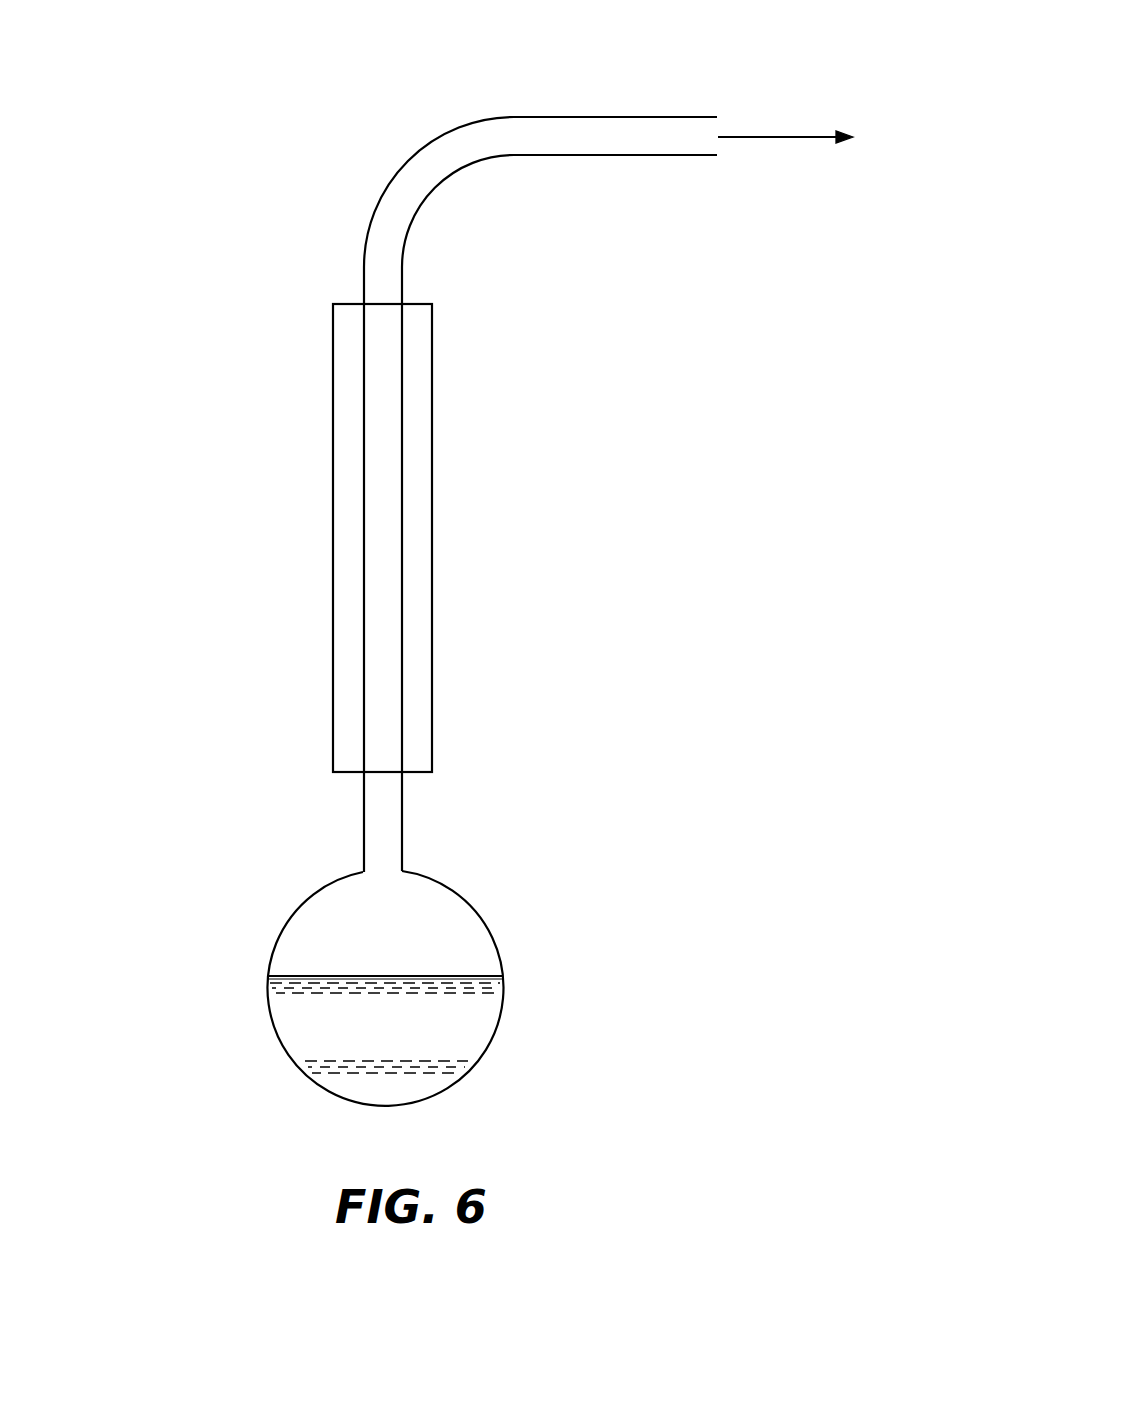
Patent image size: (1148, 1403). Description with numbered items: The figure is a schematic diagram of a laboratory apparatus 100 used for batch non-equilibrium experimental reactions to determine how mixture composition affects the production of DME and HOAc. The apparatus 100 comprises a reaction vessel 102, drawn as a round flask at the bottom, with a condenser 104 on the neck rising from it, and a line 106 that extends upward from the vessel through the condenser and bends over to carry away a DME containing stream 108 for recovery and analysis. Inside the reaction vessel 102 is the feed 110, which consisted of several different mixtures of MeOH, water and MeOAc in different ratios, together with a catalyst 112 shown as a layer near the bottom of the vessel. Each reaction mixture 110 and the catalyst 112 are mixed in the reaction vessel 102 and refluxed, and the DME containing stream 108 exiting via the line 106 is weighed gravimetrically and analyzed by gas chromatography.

The apparatus 100 is at (296, 240).
The reaction vessel 102 is at (456, 883).
The condenser 104 is at (331, 508).
The line 106 is at (563, 116).
The DME containing stream 108 is at (791, 135).
The feed 110 is at (458, 1018).
The catalyst 112 is at (356, 1074).